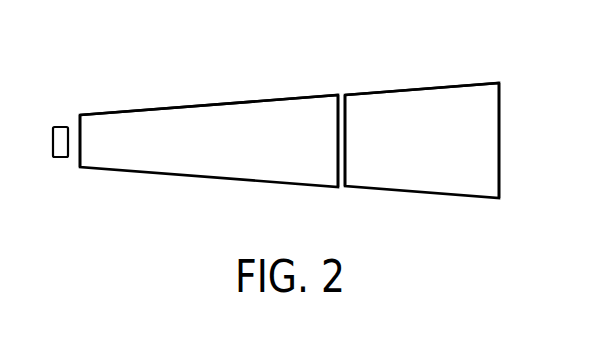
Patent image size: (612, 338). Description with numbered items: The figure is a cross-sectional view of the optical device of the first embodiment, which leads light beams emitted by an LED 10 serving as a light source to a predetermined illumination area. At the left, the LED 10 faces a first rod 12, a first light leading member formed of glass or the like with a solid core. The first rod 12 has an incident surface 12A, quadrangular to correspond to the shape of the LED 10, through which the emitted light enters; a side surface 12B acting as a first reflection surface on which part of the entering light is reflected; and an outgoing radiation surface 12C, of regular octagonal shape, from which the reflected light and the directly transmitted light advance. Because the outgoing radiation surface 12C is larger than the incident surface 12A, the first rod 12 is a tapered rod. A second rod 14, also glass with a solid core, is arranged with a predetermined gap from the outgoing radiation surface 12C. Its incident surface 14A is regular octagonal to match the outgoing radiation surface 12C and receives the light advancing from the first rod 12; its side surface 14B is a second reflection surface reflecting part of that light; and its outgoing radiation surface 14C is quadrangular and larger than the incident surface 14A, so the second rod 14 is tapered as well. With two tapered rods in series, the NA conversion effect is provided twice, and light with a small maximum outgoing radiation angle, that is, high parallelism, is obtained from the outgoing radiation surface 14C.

The LED 10 is at (60, 159).
The first rod 12 is at (198, 171).
The incident surface 12A is at (79, 121).
The side surface 12B is at (199, 105).
The outgoing radiation surface 12C is at (341, 98).
The second rod 14 is at (449, 183).
The incident surface 14A is at (342, 178).
The side surface 14B is at (379, 91).
The outgoing radiation surface 14C is at (502, 85).